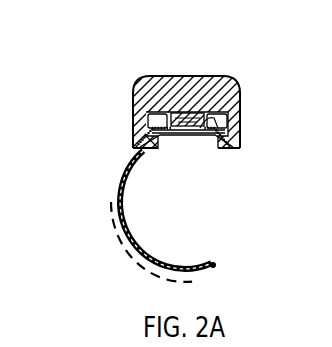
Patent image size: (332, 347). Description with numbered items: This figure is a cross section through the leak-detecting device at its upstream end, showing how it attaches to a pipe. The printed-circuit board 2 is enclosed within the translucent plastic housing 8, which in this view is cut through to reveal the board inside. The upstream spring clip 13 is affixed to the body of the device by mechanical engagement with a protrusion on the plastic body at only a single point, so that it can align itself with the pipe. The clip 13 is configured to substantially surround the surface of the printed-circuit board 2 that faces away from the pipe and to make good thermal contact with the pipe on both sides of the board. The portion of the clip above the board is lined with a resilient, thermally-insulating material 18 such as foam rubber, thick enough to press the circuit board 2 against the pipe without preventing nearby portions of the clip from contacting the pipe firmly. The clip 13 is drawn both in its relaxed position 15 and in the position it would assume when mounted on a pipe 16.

The translucent plastic housing 8 is at (134, 100).
The resilient, thermally-insulating material 18 is at (188, 114).
The printed-circuit board 2 is at (216, 121).
The upstream spring clip 13 is at (124, 166).
The relaxed position 15 is at (214, 265).
The position when mounted on a pipe 16 is at (193, 283).